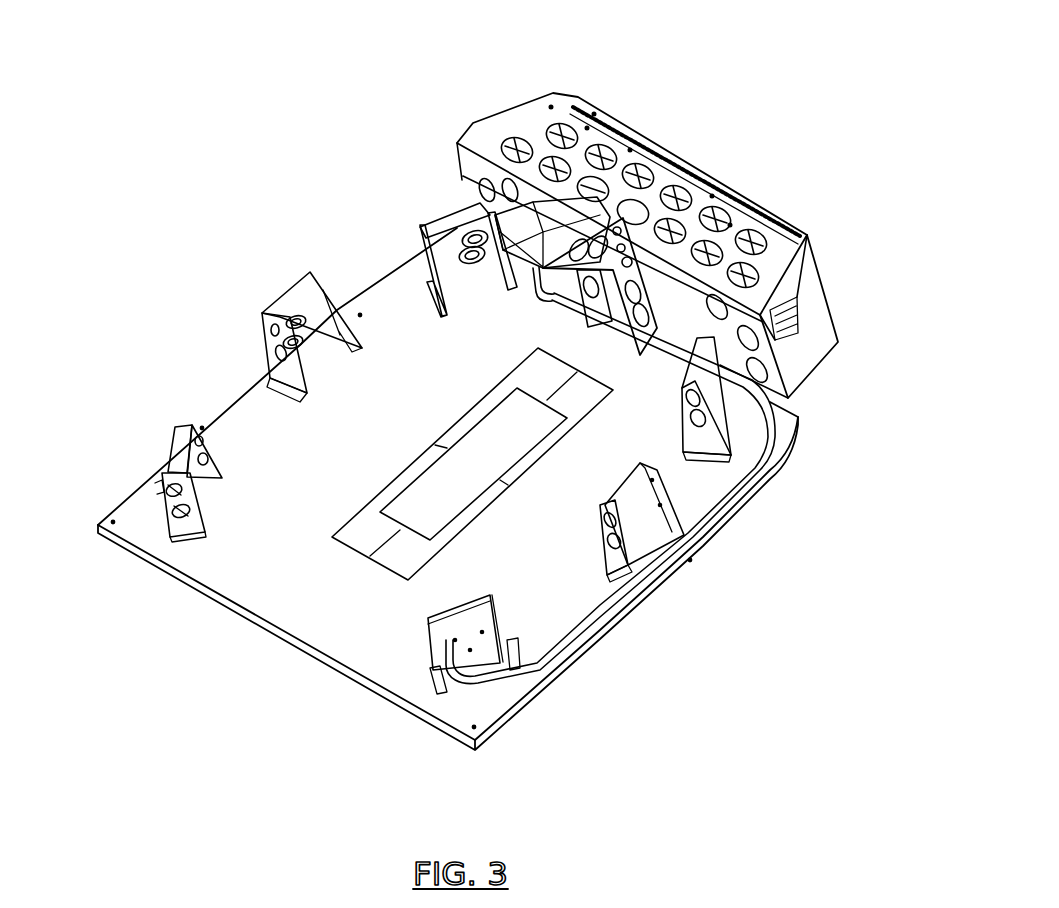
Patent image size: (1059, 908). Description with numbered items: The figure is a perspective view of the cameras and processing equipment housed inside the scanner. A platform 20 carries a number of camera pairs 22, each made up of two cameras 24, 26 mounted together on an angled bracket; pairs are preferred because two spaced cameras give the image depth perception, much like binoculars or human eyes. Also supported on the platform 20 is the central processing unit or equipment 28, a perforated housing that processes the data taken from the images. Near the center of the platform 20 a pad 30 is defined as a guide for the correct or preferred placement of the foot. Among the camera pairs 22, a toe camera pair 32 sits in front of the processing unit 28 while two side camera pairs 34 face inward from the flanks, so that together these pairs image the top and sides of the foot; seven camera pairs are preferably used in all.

The platform 20 is at (300, 503).
The camera pair 22 is at (177, 453).
The camera 24 is at (468, 235).
The camera 26 is at (463, 253).
The central processing unit 28 is at (515, 100).
The pad 30 is at (488, 483).
The toe camera pair 32 is at (524, 222).
The side camera pair 34 is at (280, 288).